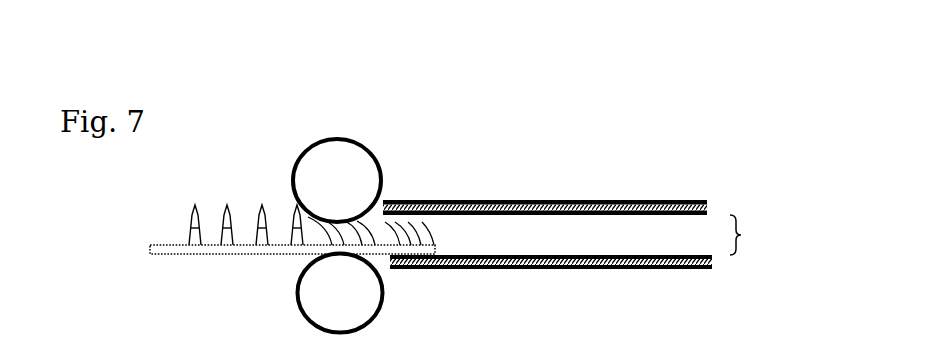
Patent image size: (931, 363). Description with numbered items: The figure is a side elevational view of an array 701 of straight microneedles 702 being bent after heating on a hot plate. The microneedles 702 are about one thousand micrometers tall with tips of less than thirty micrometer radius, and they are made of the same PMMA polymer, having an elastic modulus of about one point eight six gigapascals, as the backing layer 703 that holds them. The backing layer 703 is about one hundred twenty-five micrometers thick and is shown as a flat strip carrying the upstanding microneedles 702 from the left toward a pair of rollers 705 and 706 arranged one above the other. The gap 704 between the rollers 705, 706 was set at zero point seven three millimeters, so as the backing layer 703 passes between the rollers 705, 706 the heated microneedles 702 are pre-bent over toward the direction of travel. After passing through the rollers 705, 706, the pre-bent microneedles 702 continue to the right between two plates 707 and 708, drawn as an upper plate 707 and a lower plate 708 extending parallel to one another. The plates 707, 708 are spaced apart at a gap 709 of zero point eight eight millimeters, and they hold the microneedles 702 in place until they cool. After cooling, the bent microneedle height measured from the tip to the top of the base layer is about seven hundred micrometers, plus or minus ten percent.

The array 701 is at (250, 200).
The microneedles 702 is at (222, 205).
The backing layer 703 is at (177, 252).
The gap 704 is at (318, 237).
The roller 705 is at (438, 173).
The roller 706 is at (340, 293).
The plate 707 is at (597, 189).
The plate 708 is at (550, 277).
The gap 709 is at (762, 235).